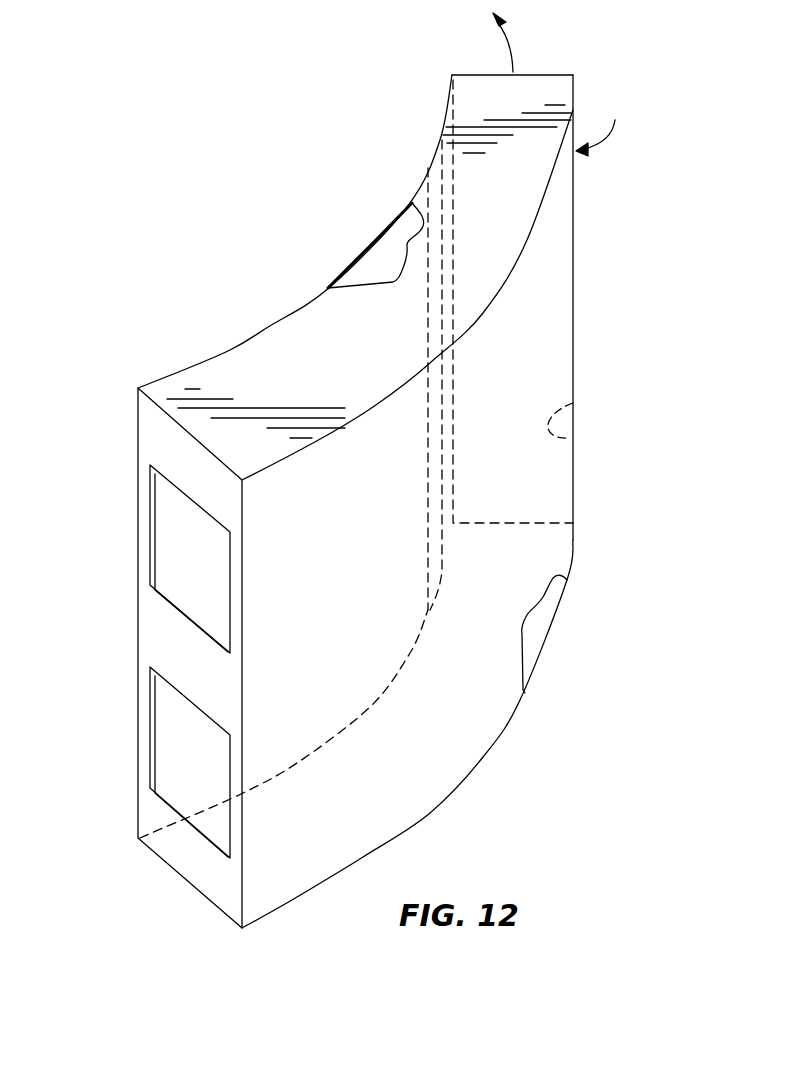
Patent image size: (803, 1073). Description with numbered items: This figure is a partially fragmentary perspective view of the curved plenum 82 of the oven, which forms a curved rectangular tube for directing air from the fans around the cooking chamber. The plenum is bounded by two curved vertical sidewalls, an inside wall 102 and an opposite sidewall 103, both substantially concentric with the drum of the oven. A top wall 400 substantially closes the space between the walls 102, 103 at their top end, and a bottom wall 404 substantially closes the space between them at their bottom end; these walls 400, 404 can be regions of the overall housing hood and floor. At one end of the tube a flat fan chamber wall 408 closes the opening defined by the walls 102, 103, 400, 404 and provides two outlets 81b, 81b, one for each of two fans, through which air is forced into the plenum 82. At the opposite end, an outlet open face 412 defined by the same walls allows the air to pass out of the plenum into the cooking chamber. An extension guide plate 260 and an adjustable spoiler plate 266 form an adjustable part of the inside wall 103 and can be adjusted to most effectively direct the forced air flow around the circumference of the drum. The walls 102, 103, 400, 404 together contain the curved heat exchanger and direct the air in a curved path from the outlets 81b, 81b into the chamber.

The curved plenum 82 is at (604, 126).
The inside wall 102 is at (552, 278).
The sidewall 103 is at (383, 263).
The extension guide plate 260 is at (427, 170).
The adjustable spoiler plate 266 is at (443, 137).
The top wall 400 is at (283, 352).
The bottom wall 404 is at (532, 632).
The fan chamber wall 408 is at (177, 443).
The outlet of the fan chamber 81b is at (158, 525).
The outlet open face 412 is at (573, 403).